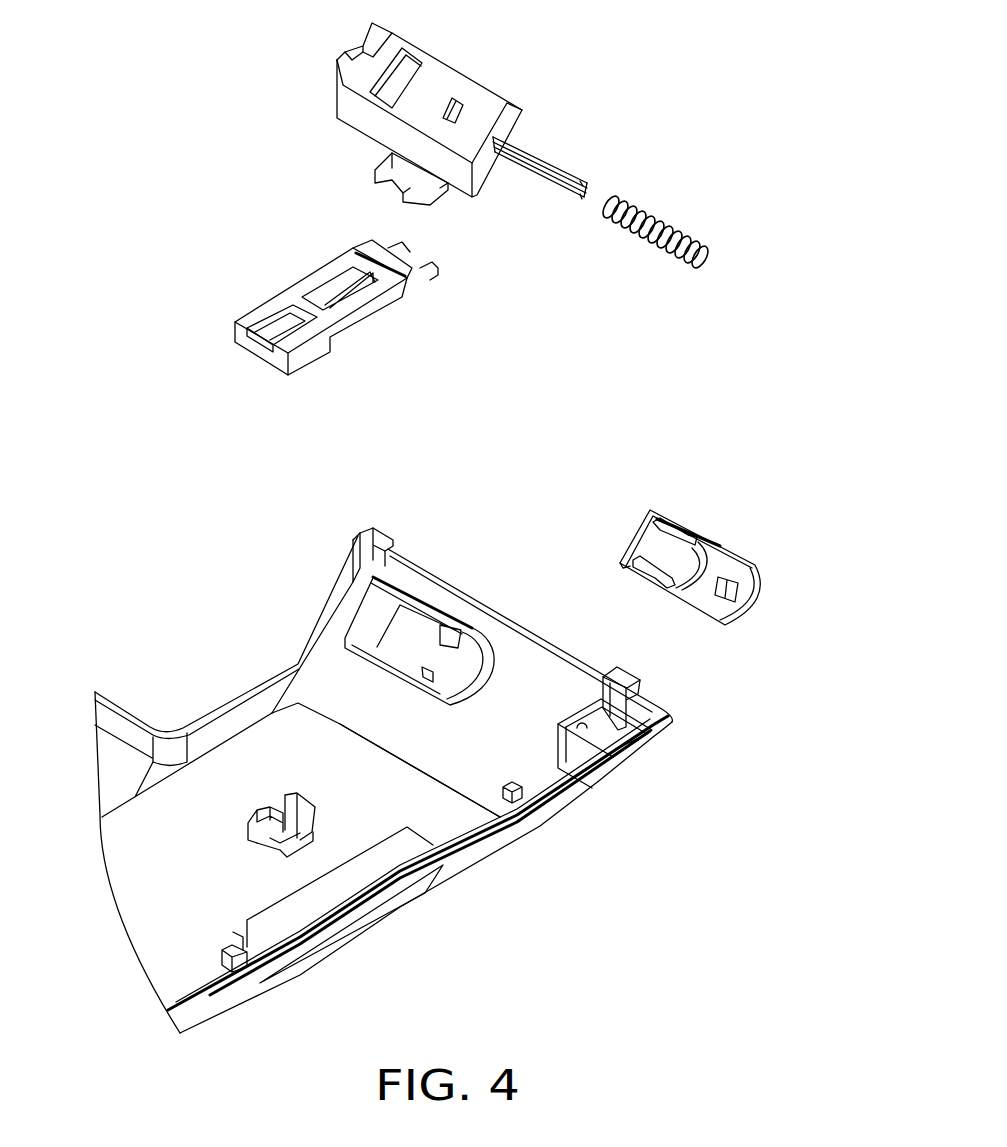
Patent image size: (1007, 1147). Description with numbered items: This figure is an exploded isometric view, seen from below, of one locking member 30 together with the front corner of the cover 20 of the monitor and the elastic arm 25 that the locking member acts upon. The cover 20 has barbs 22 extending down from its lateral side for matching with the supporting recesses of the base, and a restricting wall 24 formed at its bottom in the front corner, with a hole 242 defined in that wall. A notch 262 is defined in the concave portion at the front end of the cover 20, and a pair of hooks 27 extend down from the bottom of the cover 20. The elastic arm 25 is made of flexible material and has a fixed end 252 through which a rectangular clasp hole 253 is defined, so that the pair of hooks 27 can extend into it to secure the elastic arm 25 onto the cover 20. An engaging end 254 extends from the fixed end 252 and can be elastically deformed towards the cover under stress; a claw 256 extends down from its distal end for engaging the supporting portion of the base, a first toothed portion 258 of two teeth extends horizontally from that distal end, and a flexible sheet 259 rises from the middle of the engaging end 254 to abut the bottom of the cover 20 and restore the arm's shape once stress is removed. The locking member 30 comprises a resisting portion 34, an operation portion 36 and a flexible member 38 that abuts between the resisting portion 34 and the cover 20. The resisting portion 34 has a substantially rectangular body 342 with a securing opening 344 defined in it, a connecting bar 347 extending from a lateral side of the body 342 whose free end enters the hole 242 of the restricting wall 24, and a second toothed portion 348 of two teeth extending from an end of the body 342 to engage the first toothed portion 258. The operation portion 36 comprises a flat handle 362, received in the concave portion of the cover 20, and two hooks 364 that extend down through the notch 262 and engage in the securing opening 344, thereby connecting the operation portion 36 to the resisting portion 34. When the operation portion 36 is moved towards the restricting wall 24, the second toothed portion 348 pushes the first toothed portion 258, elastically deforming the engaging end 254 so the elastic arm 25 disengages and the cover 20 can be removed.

The cover 20 is at (482, 845).
The barbs 22 is at (550, 800).
The restricting wall 24 is at (580, 753).
The hole 242 is at (633, 748).
The elastic arm 25 is at (258, 395).
The fixed end 252 is at (307, 353).
The clasp hole 253 is at (277, 333).
The engaging end 254 is at (363, 313).
The claw 256 is at (407, 280).
The first toothed portion 258 is at (423, 270).
The flexible sheet 259 is at (348, 292).
The notch 262 is at (410, 633).
The hooks 27 is at (284, 848).
The locking member 30 is at (773, 92).
The resisting portion 34 is at (570, 117).
The body 342 is at (432, 82).
The securing opening 344 is at (395, 75).
The connecting bar 347 is at (547, 183).
The second toothed portion 348 is at (390, 163).
The operation portion 36 is at (690, 488).
The handle 362 is at (723, 565).
The hooks 364 is at (652, 510).
The flexible member 38 is at (653, 213).